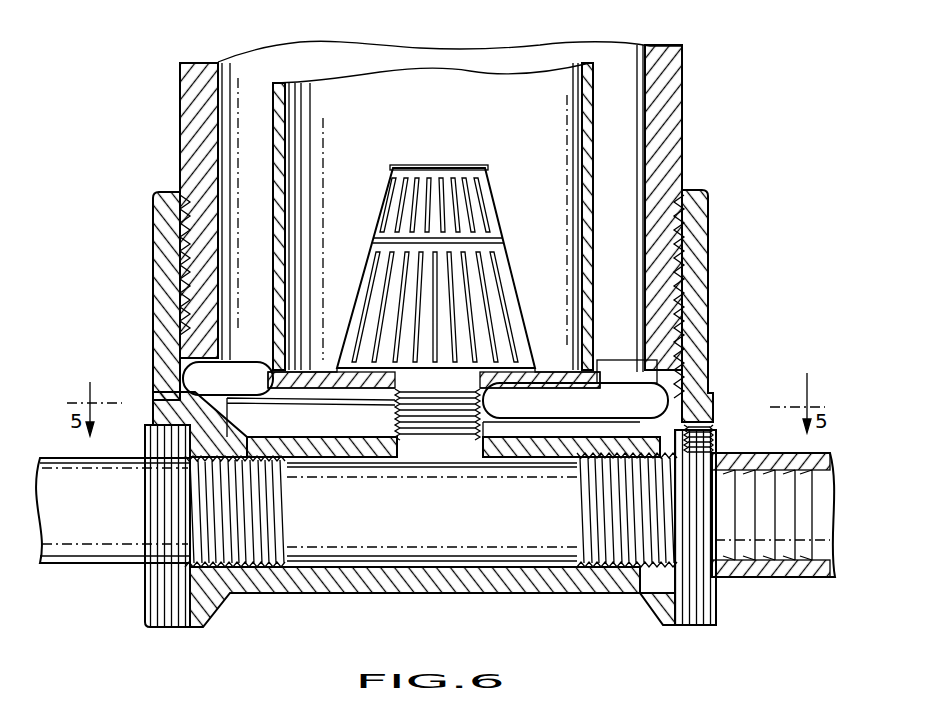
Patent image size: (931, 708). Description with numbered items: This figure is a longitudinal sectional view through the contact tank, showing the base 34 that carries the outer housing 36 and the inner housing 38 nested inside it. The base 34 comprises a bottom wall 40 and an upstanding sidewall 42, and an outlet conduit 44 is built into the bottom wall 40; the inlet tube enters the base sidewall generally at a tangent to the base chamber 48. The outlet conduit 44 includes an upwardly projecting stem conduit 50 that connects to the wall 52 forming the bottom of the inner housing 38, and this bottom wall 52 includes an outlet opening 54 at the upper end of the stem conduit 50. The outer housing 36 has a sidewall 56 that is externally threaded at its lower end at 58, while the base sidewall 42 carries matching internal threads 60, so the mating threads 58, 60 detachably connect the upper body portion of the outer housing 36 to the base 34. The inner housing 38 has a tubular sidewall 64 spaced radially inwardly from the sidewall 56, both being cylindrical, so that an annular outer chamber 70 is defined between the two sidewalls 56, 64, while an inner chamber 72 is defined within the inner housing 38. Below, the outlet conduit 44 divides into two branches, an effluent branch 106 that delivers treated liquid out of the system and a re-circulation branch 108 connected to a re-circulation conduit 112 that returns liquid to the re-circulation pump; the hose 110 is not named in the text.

The base 34 is at (148, 302).
The outer housing 36 is at (692, 106).
The inner housing 38 is at (602, 184).
The bottom wall 40 is at (385, 587).
The sidewall 42 is at (710, 232).
The outlet conduit 44 is at (528, 538).
The base chamber 48 is at (645, 412).
The stem conduit 50 is at (380, 422).
The bottom wall 52 is at (344, 358).
The outlet opening 54 is at (447, 390).
The sidewall 56 is at (190, 85).
The external threads 58 is at (185, 250).
The internal threads 60 is at (686, 248).
The tubular sidewall 64 is at (287, 137).
The outer chamber 70 is at (623, 88).
The inner chamber 72 is at (520, 90).
The effluent branch 106 is at (630, 580).
The re-circulation branch 108 is at (235, 552).
The hose 110 is at (822, 580).
The re-circulation conduit 112 is at (112, 540).